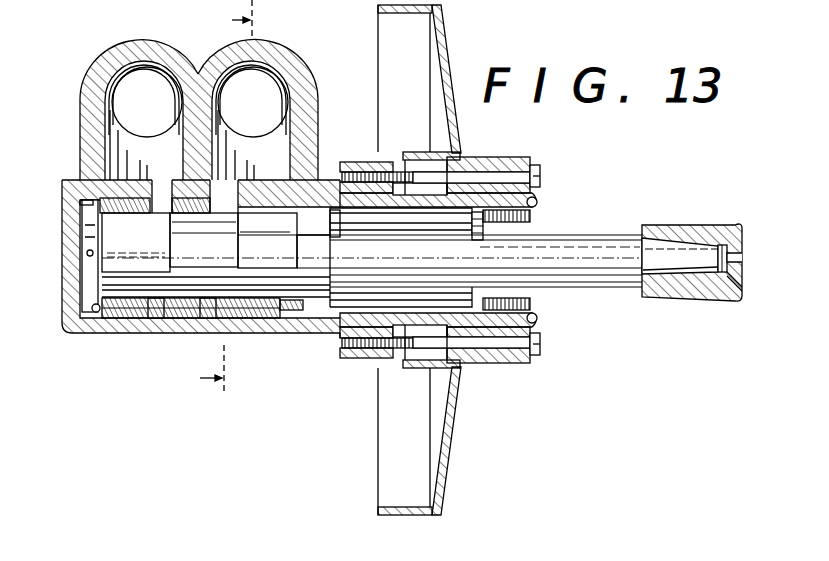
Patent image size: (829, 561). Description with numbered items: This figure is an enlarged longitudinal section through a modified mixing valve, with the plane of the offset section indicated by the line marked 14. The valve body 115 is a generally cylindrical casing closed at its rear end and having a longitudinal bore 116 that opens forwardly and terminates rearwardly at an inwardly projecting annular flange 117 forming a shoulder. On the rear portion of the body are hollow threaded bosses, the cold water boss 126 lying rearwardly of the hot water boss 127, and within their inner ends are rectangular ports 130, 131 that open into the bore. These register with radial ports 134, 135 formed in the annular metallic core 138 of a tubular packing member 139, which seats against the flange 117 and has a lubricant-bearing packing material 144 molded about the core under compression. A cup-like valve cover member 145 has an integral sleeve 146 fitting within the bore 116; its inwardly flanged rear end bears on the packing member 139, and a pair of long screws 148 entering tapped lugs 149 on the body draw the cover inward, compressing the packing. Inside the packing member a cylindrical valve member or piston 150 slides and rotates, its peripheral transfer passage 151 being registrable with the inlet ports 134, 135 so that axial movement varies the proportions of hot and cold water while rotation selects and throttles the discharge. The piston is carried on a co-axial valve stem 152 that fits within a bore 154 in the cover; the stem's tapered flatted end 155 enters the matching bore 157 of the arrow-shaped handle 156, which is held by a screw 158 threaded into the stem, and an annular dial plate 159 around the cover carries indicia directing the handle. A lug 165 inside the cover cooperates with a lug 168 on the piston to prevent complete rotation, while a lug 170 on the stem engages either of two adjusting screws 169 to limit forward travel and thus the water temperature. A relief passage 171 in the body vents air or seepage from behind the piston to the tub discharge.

The section line 14- 14 is at (226, 207).
The valve body 115 is at (112, 323).
The longitudinal bore 116 is at (300, 322).
The annular flange 117 is at (98, 312).
The cold water inlet boss 126 is at (115, 78).
The hot water inlet boss 127 is at (275, 80).
The cold water port 130 is at (163, 192).
The hot water port 131 is at (236, 192).
The cold water inlet port 134 is at (162, 200).
The hot water inlet port 135 is at (233, 208).
The annular metallic core 138 is at (212, 200).
The tubular packing member 139 is at (237, 318).
The packing material 144 is at (167, 316).
The valve cover member 145 is at (536, 183).
The sleeve or tubular portion 146 is at (325, 182).
The long screws 148 is at (480, 178).
The tapped lugs 149 is at (366, 166).
The valve member or piston 150 is at (113, 277).
The transfer passage or port 151 is at (232, 250).
The valve stem 152 is at (593, 268).
The bore 154 is at (533, 238).
The tapered or flatted end 155 is at (658, 244).
The arrow-shaped handle 156 is at (698, 302).
The tapered interiorly flatted bore 157 is at (700, 246).
The screw 158 is at (738, 257).
The annular dial plate 159 is at (450, 421).
The lug 165 is at (335, 214).
The co-operating lug 168 is at (313, 232).
The adjusting screws 169 is at (536, 201).
The lug 170 is at (472, 240).
The relief passage 171 is at (88, 252).